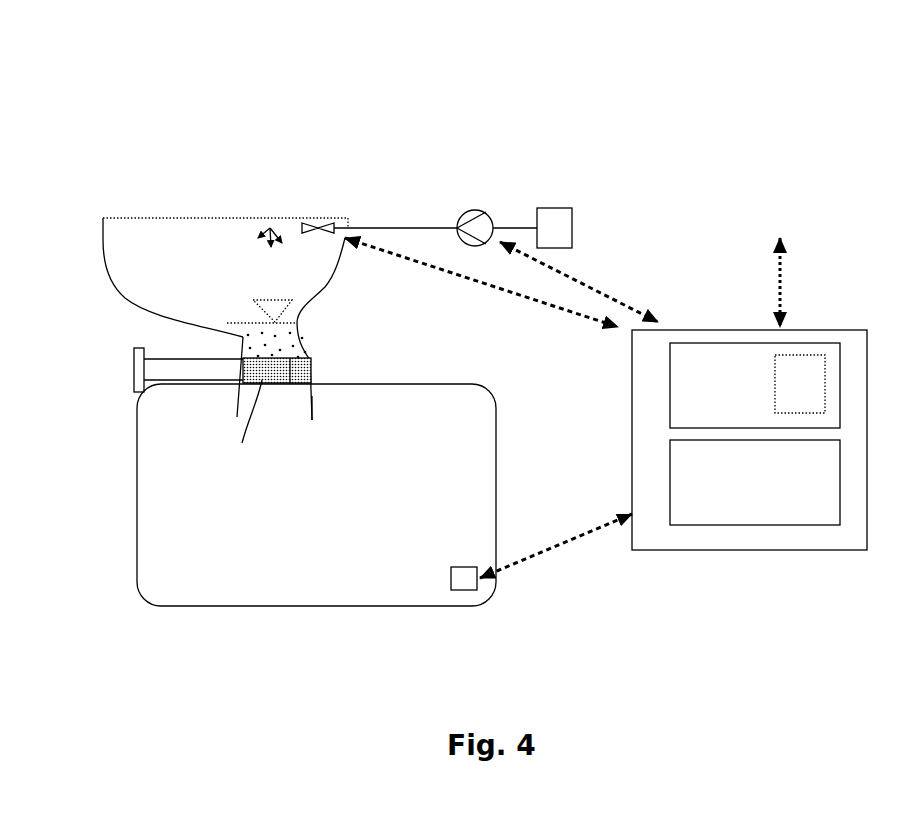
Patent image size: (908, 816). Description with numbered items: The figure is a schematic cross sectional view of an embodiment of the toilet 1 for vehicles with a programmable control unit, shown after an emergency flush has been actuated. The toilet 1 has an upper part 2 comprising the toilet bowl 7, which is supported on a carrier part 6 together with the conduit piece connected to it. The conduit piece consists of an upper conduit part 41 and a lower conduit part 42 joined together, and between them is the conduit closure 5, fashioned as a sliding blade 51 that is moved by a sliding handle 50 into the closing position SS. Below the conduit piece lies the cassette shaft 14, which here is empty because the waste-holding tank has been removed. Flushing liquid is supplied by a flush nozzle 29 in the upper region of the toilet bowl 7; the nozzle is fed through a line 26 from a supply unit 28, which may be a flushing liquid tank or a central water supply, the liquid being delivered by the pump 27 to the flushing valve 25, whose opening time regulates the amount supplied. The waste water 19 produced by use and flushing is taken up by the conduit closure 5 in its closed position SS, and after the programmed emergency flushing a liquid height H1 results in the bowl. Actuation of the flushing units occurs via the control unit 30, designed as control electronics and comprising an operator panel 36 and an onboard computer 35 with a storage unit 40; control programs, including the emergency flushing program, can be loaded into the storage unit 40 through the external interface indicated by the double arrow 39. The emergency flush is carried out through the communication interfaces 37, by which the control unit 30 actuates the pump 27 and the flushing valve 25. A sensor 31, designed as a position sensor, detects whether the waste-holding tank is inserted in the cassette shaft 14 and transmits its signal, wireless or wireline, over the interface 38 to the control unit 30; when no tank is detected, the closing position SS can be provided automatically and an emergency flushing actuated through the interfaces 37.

The toilet 1 is at (712, 80).
The upper part 2 is at (110, 240).
The conduit closure 5 is at (249, 427).
The carrier part 6 is at (428, 384).
The toilet bowl 7 is at (137, 280).
The cassette shaft 14 is at (163, 489).
The waste water 19 is at (245, 342).
The flushing valve 25 is at (332, 223).
The line 26 is at (435, 228).
The pump 27 is at (488, 230).
The supply unit 28 is at (557, 214).
The flush nozzle 29 is at (262, 228).
The control unit 30 is at (803, 342).
The sensor 31 is at (460, 580).
The onboard computer 35 is at (729, 395).
The operator panel 36 is at (771, 500).
The communication interfaces 37 is at (501, 282).
The interface 38 is at (556, 546).
The external interface 39 is at (799, 282).
The storage unit 40 is at (809, 390).
The upper conduit part 41 is at (315, 342).
The lower conduit part 42 is at (312, 396).
The sliding handle 50 is at (138, 375).
The sliding blade 51 is at (277, 372).
The liquid height H1 is at (258, 299).
The closing position SS is at (327, 374).